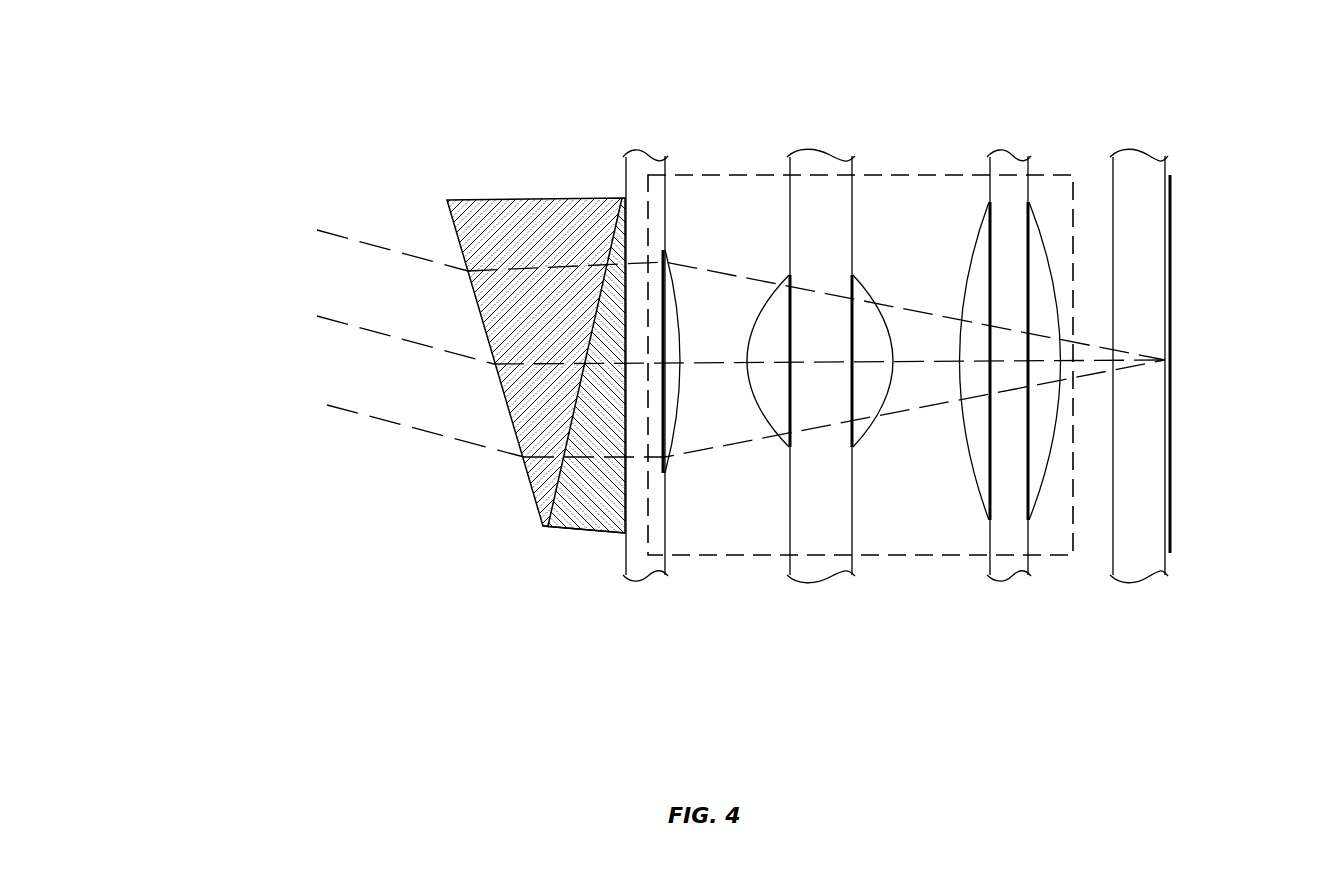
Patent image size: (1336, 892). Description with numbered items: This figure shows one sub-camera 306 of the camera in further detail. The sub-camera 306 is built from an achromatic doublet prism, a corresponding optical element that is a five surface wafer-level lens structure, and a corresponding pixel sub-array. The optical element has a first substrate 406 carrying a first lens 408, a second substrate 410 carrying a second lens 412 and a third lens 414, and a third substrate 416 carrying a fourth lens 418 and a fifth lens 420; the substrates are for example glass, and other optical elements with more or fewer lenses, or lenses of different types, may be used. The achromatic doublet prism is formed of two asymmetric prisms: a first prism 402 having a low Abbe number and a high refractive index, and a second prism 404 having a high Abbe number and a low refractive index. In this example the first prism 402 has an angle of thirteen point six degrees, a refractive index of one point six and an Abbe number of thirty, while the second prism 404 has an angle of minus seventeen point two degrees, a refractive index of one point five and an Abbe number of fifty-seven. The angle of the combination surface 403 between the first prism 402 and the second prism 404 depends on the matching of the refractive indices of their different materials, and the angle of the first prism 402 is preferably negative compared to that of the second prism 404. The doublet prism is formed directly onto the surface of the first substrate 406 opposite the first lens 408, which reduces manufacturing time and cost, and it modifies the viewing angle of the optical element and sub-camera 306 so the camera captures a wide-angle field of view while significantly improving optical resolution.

The sub-camera 306 is at (186, 75).
The second prism 404 is at (543, 245).
The combination surface 403 is at (552, 481).
The first prism 402 is at (585, 535).
The first substrate 406 is at (648, 162).
The first lens 408 is at (690, 432).
The second substrate 410 is at (821, 162).
The second lens 412 is at (748, 293).
The third lens 414 is at (886, 286).
The third substrate 416 is at (1008, 162).
The fourth lens 418 is at (972, 216).
The fifth lens 420 is at (1048, 206).